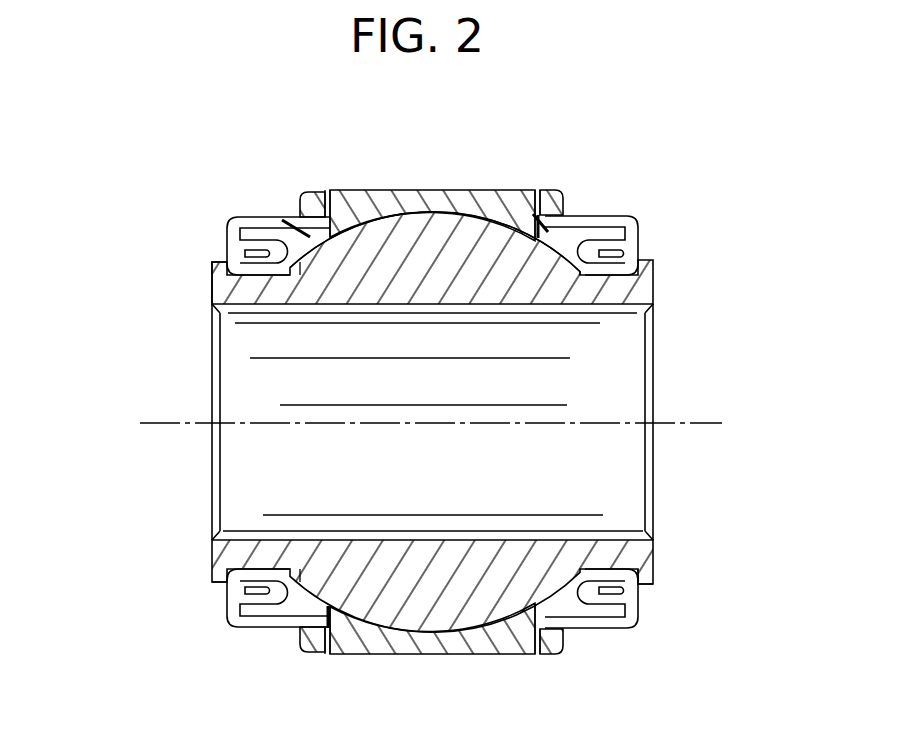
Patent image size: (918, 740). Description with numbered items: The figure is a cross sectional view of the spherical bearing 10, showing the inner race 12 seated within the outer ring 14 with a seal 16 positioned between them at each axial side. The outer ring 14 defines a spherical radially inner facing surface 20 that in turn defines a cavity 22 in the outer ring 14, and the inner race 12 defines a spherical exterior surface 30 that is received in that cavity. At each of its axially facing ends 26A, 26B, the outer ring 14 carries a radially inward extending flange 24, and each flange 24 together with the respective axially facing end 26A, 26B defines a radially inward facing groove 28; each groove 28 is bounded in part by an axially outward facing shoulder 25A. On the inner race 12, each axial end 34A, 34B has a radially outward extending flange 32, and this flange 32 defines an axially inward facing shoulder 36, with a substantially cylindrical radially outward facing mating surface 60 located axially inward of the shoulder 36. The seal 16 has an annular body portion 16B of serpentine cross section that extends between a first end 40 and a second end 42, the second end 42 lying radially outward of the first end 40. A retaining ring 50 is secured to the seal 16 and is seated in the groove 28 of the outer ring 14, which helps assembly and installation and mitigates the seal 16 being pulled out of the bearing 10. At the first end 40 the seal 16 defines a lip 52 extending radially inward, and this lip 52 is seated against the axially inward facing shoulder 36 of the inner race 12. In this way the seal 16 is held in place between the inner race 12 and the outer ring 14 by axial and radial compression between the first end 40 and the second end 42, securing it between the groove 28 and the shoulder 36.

The bearing 10 is at (449, 130).
The inner race 12 is at (362, 278).
The outer ring 14 is at (500, 200).
The seal 16 is at (618, 218).
The annular body portion 16B is at (270, 634).
The spherical radially inner facing surface 20 is at (340, 228).
The cavity 22 is at (262, 222).
The radially inward extending flange 24 is at (282, 220).
The axially outward facing shoulder 25A is at (538, 222).
The axially facing end 26A is at (553, 198).
The axially facing end 26B is at (305, 195).
The radially inward facing groove 28 is at (325, 215).
The spherical exterior surface 30 is at (330, 575).
The radially outward extending flange 32 is at (230, 583).
The axial end 34A is at (655, 558).
The axial end 34B is at (210, 560).
The axially inward facing shoulder 36 is at (232, 600).
The first end 40 is at (628, 572).
The second end 42 is at (575, 633).
The retaining ring 50 is at (345, 228).
The lip 52 is at (212, 267).
The radially outward facing mating surface 60 is at (578, 272).